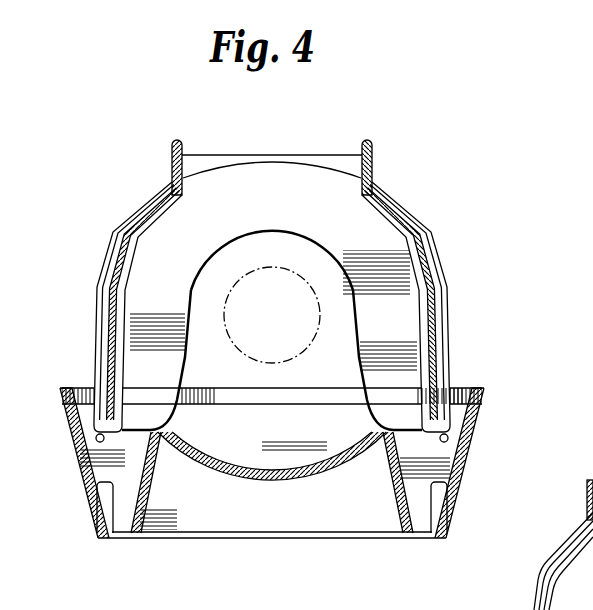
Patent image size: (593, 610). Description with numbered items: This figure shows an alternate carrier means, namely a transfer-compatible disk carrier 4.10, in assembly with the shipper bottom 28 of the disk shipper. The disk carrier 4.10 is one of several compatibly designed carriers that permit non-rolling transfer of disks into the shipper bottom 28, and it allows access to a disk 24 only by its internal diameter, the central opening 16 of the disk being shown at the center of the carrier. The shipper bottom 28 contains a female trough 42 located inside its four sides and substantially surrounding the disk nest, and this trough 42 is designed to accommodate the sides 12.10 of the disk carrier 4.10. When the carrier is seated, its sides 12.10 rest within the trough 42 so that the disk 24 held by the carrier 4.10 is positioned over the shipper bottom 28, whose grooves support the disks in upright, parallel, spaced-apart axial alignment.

The disk carrier 4.10 is at (440, 210).
The sides of disk carrier 12.10 is at (443, 336).
The aperture 16 is at (284, 362).
The disk 24 is at (413, 375).
The shipper bottom 28 is at (470, 467).
The female trough 42 is at (92, 388).